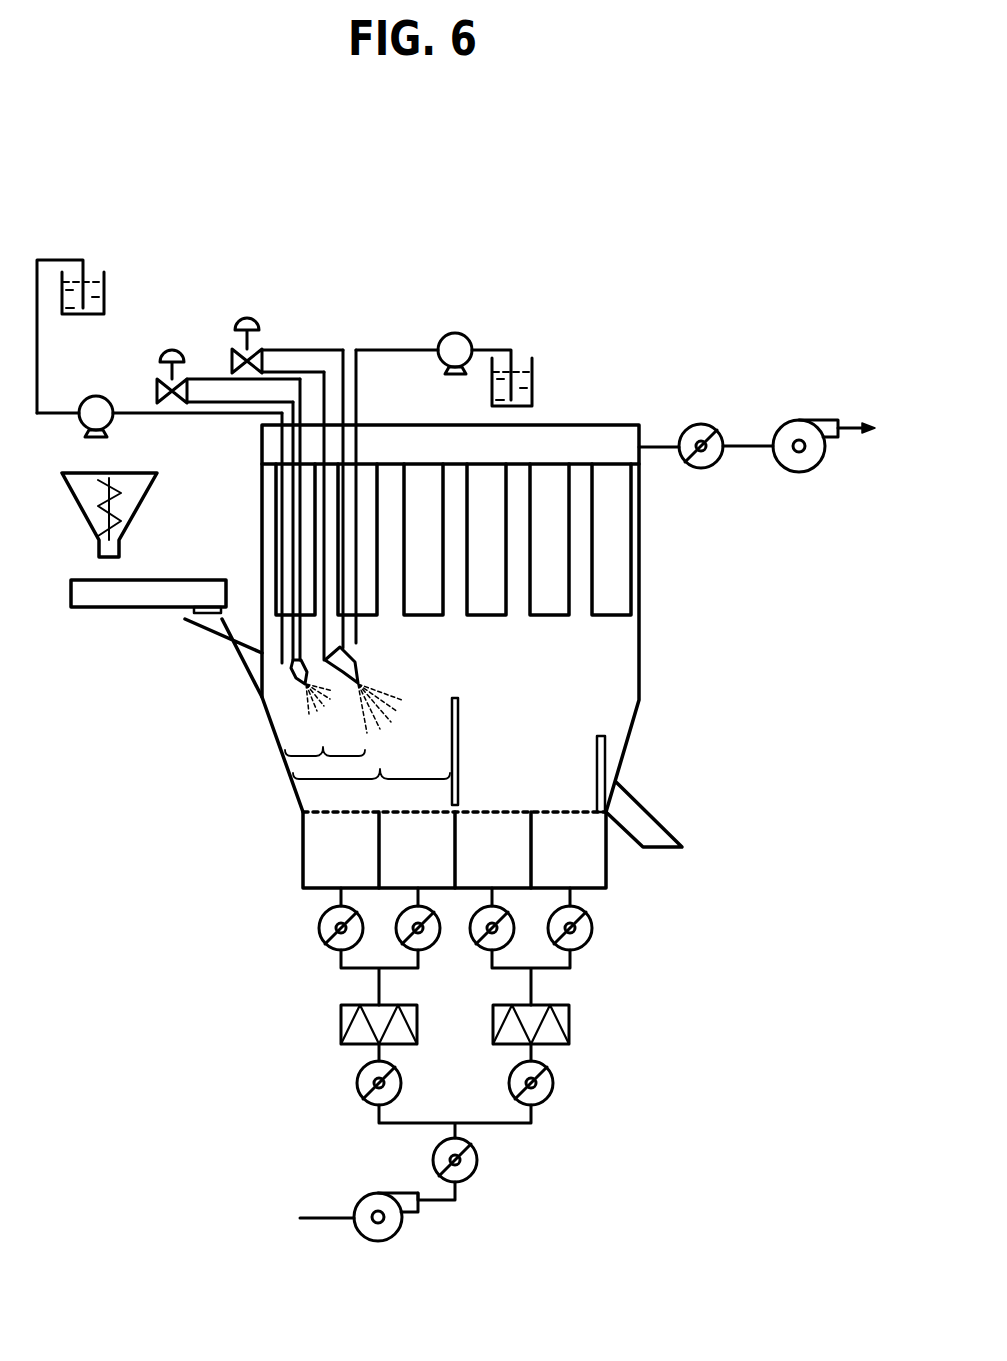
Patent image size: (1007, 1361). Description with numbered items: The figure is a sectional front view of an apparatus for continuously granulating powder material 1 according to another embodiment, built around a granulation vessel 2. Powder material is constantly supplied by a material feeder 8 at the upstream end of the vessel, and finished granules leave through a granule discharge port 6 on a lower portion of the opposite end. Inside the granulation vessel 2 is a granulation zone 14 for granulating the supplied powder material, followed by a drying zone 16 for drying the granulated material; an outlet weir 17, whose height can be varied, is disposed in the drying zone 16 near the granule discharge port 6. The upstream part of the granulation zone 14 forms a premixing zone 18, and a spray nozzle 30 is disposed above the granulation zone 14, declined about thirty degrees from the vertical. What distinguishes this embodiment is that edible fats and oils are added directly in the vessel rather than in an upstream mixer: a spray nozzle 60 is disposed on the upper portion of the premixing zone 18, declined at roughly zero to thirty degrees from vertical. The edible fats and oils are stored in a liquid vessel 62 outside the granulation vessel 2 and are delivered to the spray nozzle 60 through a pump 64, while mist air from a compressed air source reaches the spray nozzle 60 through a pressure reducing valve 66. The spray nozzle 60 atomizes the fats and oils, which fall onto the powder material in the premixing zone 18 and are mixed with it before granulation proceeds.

The apparatus for continuously granulating powder material 1 is at (456, 713).
The granulation vessel 2 is at (641, 685).
The granule discharge port 6 is at (647, 810).
The material feeder 8 is at (140, 507).
The granulation zone 14 is at (381, 769).
The drying zone 16 is at (520, 767).
The outlet weir 17 is at (606, 760).
The premixing zone 18 is at (325, 734).
The spray nozzle 30 is at (355, 665).
The spray nozzle 60 is at (292, 667).
The liquid vessel 62 is at (105, 290).
The pump 64 is at (92, 396).
The pressure reducing valve 66 is at (176, 351).